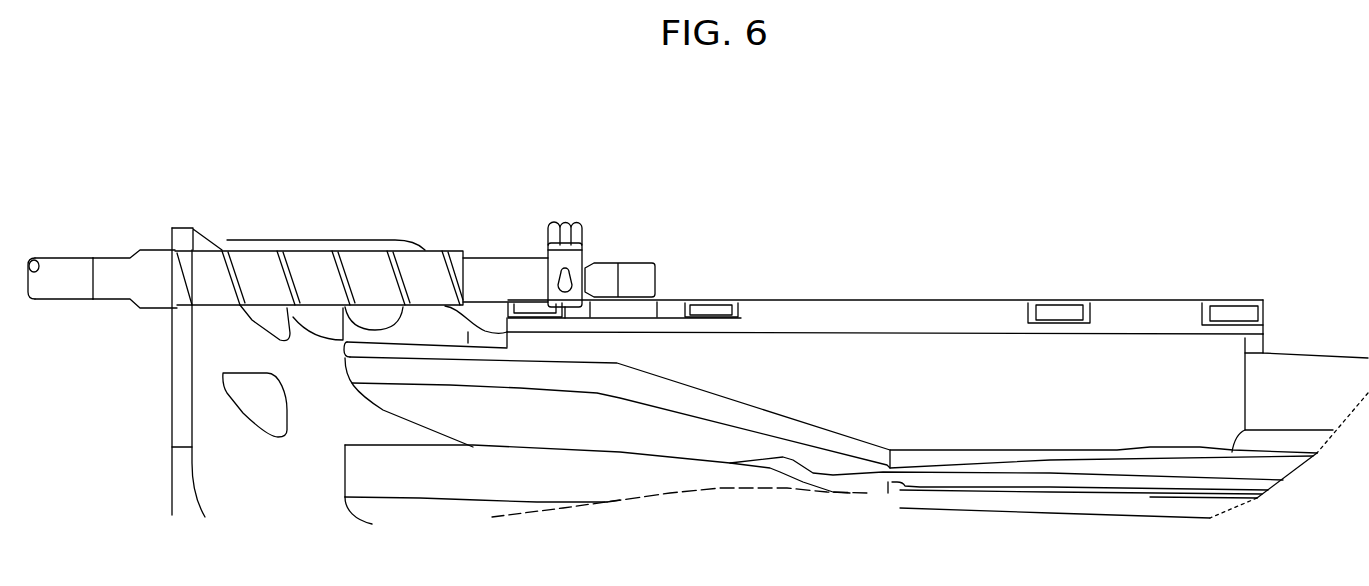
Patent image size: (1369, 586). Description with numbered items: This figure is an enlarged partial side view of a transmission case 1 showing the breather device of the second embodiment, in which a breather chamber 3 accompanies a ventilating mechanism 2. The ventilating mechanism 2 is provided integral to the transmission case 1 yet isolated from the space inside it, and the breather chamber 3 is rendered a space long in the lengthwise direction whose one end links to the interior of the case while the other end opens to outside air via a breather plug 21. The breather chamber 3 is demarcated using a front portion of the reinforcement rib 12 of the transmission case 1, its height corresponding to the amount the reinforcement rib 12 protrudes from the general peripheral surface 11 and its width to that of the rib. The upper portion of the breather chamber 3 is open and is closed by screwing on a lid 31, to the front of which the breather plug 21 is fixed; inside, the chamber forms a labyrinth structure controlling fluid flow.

The transmission case 1 is at (166, 407).
The ventilating mechanism 2 is at (428, 241).
The breather plug 21 is at (631, 270).
The breather chamber 3 is at (877, 291).
The lid 31 is at (1133, 302).
The general peripheral surface 11 is at (1202, 452).
The reinforcement rib 12 is at (1298, 353).